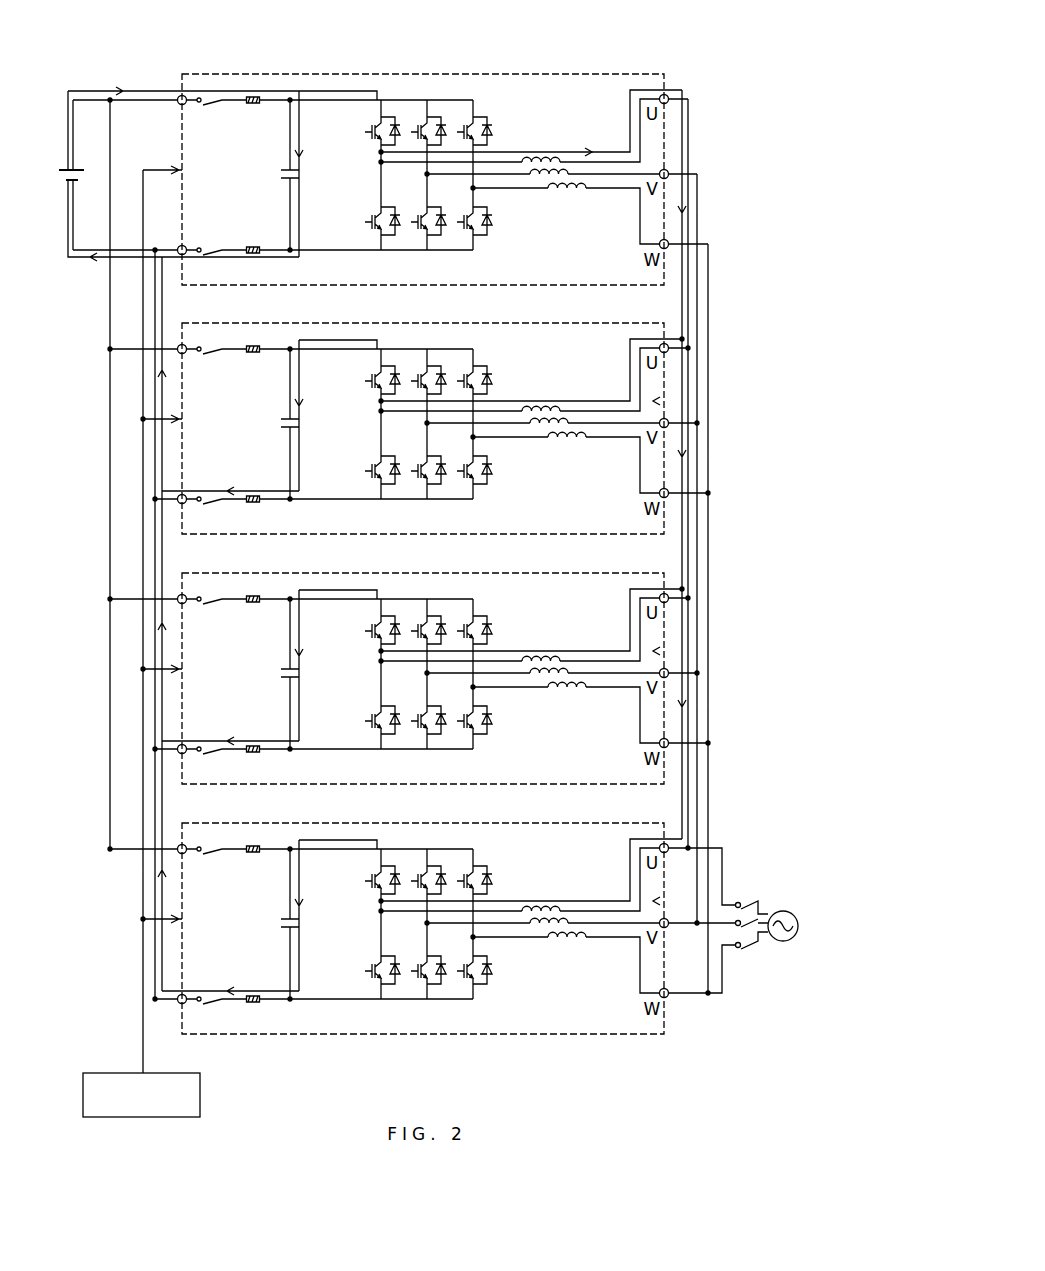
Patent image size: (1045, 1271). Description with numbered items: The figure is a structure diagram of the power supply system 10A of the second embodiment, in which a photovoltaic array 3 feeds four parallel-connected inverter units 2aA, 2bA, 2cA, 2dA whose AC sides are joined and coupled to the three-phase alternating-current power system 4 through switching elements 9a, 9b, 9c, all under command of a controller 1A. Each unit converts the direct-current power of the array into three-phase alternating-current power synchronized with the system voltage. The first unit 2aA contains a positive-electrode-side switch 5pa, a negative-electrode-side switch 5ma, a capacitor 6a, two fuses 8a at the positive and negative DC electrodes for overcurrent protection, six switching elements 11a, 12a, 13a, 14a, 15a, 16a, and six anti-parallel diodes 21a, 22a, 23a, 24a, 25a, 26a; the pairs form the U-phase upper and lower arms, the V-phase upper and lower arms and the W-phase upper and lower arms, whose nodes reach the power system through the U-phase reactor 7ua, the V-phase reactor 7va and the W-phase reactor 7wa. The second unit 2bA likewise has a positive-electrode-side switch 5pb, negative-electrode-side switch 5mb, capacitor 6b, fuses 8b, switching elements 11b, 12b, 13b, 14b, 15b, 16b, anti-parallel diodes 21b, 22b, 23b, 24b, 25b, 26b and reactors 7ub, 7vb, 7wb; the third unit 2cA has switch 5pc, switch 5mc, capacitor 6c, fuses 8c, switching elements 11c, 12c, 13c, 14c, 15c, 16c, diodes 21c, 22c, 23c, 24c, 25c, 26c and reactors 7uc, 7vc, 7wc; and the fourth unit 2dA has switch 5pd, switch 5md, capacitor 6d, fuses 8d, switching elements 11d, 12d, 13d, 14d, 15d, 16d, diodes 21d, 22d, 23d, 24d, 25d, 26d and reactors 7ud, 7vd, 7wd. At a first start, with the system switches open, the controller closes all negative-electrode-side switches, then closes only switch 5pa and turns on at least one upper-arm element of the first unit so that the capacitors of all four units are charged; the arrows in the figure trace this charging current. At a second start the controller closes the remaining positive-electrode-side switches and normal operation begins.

The power supply system 10A is at (735, 41).
The photovoltaic array 3 is at (64, 167).
The controller 1A is at (141, 1118).
The three-phase alternating-current power system 4 is at (783, 911).
The switching element 9a is at (740, 902).
The switching element 9b is at (757, 933).
The switching element 9c is at (745, 952).
The inverter unit 2aA is at (556, 74).
The positive-electrode-side switch 5pa is at (205, 104).
The negative-electrode-side switch 5ma is at (205, 252).
The capacitor 6a is at (280, 174).
The fuse 8a is at (253, 96).
The switching element 11a is at (365, 132).
The switching element 12a is at (365, 222).
The switching element 13a is at (411, 128).
The switching element 14a is at (411, 222).
The switching element 15a is at (463, 118).
The switching element 16a is at (466, 230).
The anti-parallel diode 21a is at (395, 122).
The anti-parallel diode 22a is at (396, 236).
The anti-parallel diode 23a is at (443, 122).
The anti-parallel diode 24a is at (442, 236).
The anti-parallel diode 25a is at (492, 130).
The anti-parallel diode 26a is at (493, 221).
The U-phase reactor 7ua is at (535, 160).
The V-phase reactor 7va is at (548, 172).
The W-phase reactor 7wa is at (585, 184).
The inverter unit 2bA is at (423, 414).
The positive-electrode-side switch 5pb is at (216, 367).
The negative-electrode-side switch 5mb is at (225, 513).
The capacitor 6b is at (269, 425).
The fuse 8b is at (267, 414).
The switching element 11b is at (350, 380).
The switching element 12b is at (350, 470).
The switching element 13b is at (425, 345).
The switching element 14b is at (428, 493).
The switching element 15b is at (486, 363).
The switching element 16b is at (488, 481).
The anti-parallel diode 21b is at (388, 345).
The anti-parallel diode 22b is at (392, 493).
The anti-parallel diode 23b is at (460, 345).
The anti-parallel diode 24b is at (456, 493).
The anti-parallel diode 25b is at (507, 375).
The anti-parallel diode 26b is at (511, 470).
The U-phase reactor 7ub is at (551, 384).
The V-phase reactor 7vb is at (568, 399).
The W-phase reactor 7wb is at (581, 453).
The inverter unit 2cA is at (423, 664).
The positive-electrode-side switch 5pc is at (216, 617).
The negative-electrode-side switch 5mc is at (225, 763).
The capacitor 6c is at (269, 675).
The fuse 8c is at (267, 664).
The switching element 11c is at (350, 630).
The switching element 12c is at (350, 720).
The switching element 13c is at (424, 595).
The switching element 14c is at (428, 743).
The switching element 15c is at (486, 613).
The switching element 16c is at (487, 731).
The anti-parallel diode 21c is at (388, 595).
The anti-parallel diode 22c is at (392, 743).
The anti-parallel diode 23c is at (459, 595).
The anti-parallel diode 24c is at (456, 743).
The anti-parallel diode 25c is at (506, 625).
The anti-parallel diode 26c is at (510, 720).
The U-phase reactor 7uc is at (551, 634).
The V-phase reactor 7vc is at (567, 649).
The W-phase reactor 7wc is at (581, 703).
The inverter unit 2dA is at (423, 914).
The positive-electrode-side switch 5pd is at (216, 867).
The negative-electrode-side switch 5md is at (225, 1013).
The capacitor 6d is at (269, 925).
The fuse 8d is at (267, 914).
The switching element 11d is at (350, 880).
The switching element 12d is at (350, 970).
The switching element 13d is at (425, 845).
The switching element 14d is at (428, 993).
The switching element 15d is at (486, 863).
The switching element 16d is at (488, 981).
The anti-parallel diode 21d is at (388, 845).
The anti-parallel diode 22d is at (392, 993).
The anti-parallel diode 23d is at (460, 845).
The anti-parallel diode 24d is at (456, 993).
The anti-parallel diode 25d is at (507, 875).
The anti-parallel diode 26d is at (511, 970).
The U-phase reactor 7ud is at (551, 884).
The V-phase reactor 7vd is at (568, 899).
The W-phase reactor 7wd is at (581, 953).